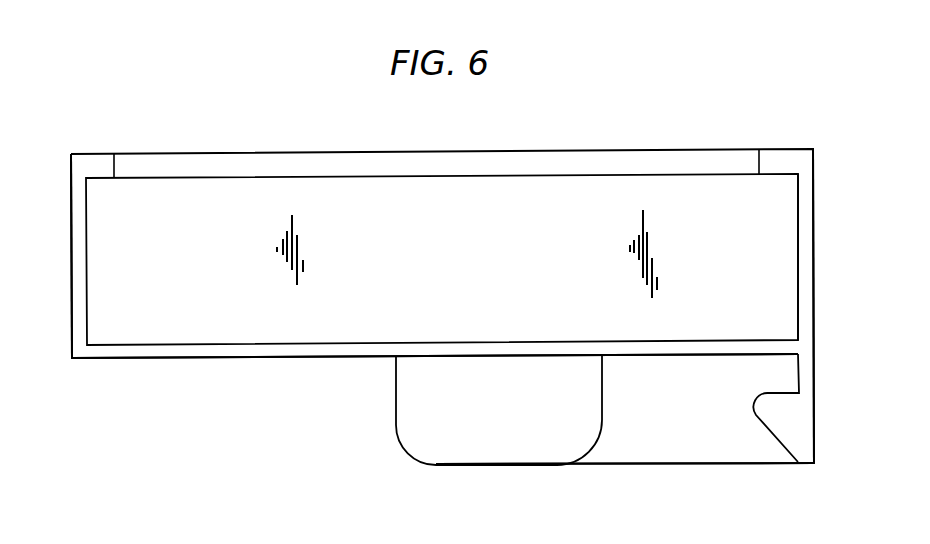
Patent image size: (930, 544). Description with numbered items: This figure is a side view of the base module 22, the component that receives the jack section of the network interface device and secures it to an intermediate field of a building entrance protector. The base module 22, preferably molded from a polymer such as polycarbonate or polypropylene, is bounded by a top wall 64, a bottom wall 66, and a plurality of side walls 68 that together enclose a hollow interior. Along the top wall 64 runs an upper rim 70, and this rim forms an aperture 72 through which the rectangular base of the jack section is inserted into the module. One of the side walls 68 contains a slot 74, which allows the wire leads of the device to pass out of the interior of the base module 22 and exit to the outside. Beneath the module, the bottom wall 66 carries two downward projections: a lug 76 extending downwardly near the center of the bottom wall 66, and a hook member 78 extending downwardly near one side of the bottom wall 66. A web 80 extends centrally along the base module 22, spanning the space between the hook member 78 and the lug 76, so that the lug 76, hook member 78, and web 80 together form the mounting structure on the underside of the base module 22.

The base module 22 is at (456, 278).
The top wall 64 is at (91, 154).
The bottom wall 66 is at (150, 358).
The side walls 68 is at (72, 283).
The upper rim 70 is at (100, 178).
The aperture 72 is at (758, 160).
The slot 74 is at (806, 216).
The lug 76 is at (412, 448).
The hook member 78 is at (797, 420).
The web 80 is at (668, 450).